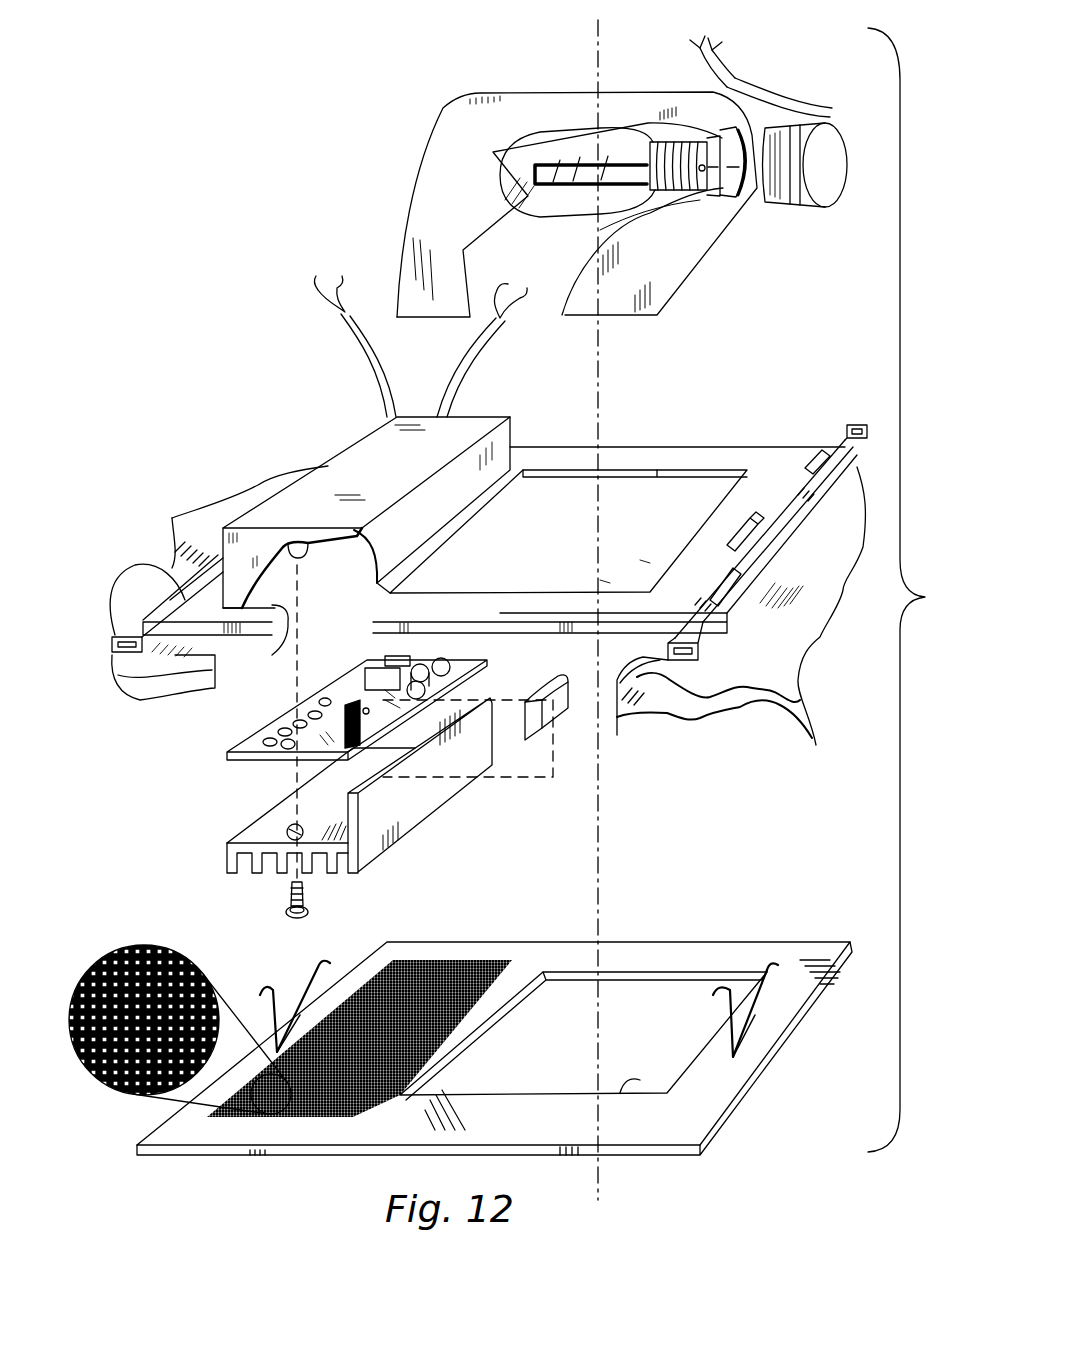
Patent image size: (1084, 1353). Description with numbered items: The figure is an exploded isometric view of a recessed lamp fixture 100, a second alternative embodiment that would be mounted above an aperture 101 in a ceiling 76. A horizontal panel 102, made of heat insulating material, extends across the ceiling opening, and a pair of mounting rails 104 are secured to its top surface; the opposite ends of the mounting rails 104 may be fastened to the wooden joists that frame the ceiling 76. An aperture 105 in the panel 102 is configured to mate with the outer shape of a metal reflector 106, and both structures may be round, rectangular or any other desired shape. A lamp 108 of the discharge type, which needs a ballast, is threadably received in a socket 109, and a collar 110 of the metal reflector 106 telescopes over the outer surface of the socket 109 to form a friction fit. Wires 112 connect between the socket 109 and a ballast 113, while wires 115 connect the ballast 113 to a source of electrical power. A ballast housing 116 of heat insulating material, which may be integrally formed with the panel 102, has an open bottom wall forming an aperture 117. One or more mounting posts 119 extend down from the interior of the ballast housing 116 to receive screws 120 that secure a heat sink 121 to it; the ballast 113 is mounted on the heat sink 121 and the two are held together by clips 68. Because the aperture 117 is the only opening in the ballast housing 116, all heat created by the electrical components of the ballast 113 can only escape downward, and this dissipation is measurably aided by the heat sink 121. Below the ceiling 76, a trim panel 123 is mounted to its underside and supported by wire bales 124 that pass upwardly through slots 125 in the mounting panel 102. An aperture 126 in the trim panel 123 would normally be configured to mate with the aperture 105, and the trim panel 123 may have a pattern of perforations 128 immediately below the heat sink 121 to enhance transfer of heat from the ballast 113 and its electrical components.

The recessed lamp fixture 100 is at (921, 500).
The metal reflector 106 is at (452, 133).
The lamp 108 is at (568, 207).
The collar 110 is at (737, 184).
The socket 109 is at (834, 172).
The wires 112 is at (768, 103).
The wires 115 is at (378, 376).
The ballast housing 116 is at (347, 470).
The mounting post 119 is at (296, 552).
The aperture 117 is at (257, 647).
The aperture 105 is at (636, 470).
The horizontal panel 102 is at (568, 543).
The mounting rails 104 is at (822, 427).
The slots 125 is at (743, 512).
The ceiling 76 is at (197, 533).
The aperture 101 is at (620, 683).
The ballast 113 is at (263, 747).
The clips 68 is at (551, 694).
The heat sink 121 is at (277, 818).
The screws 120 is at (310, 903).
The trim panel 123 is at (707, 1090).
The aperture 126 is at (640, 1080).
The wire bales 124 is at (276, 1000).
The perforations 128 is at (98, 962).